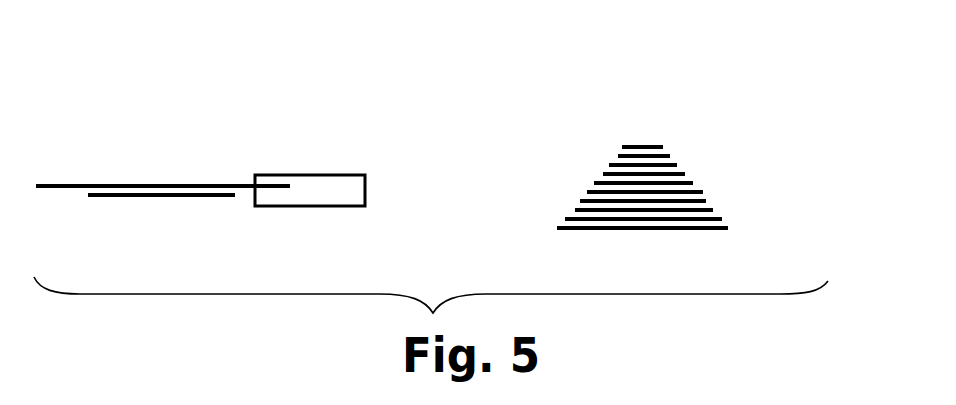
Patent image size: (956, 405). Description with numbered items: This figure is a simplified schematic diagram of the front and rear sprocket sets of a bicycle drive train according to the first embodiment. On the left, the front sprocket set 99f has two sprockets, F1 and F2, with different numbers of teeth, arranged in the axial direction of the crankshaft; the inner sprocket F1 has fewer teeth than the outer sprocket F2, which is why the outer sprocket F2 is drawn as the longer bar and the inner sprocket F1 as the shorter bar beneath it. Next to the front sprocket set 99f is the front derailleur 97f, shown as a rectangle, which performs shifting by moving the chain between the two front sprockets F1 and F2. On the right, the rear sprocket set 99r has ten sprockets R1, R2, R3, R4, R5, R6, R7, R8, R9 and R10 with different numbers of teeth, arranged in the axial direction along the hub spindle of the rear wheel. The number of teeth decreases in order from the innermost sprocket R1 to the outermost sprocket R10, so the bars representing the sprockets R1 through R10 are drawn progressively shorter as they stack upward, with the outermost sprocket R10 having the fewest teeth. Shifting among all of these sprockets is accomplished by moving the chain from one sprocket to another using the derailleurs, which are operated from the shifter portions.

The front sprocket set 99f is at (218, 134).
The outer sprocket F2 is at (116, 184).
The inner sprocket F1 is at (122, 197).
The front derailleur 97f is at (313, 174).
The rear sprocket set 99r is at (646, 90).
The innermost sprocket R1 is at (557, 228).
The rear sprocket R2 is at (565, 219).
The rear sprocket R3 is at (575, 210).
The rear sprocket R4 is at (580, 201).
The rear sprocket R5 is at (587, 192).
The rear sprocket R6 is at (693, 183).
The rear sprocket R7 is at (685, 174).
The rear sprocket R8 is at (677, 165).
The rear sprocket R9 is at (670, 156).
The outermost sprocket R10 is at (663, 147).